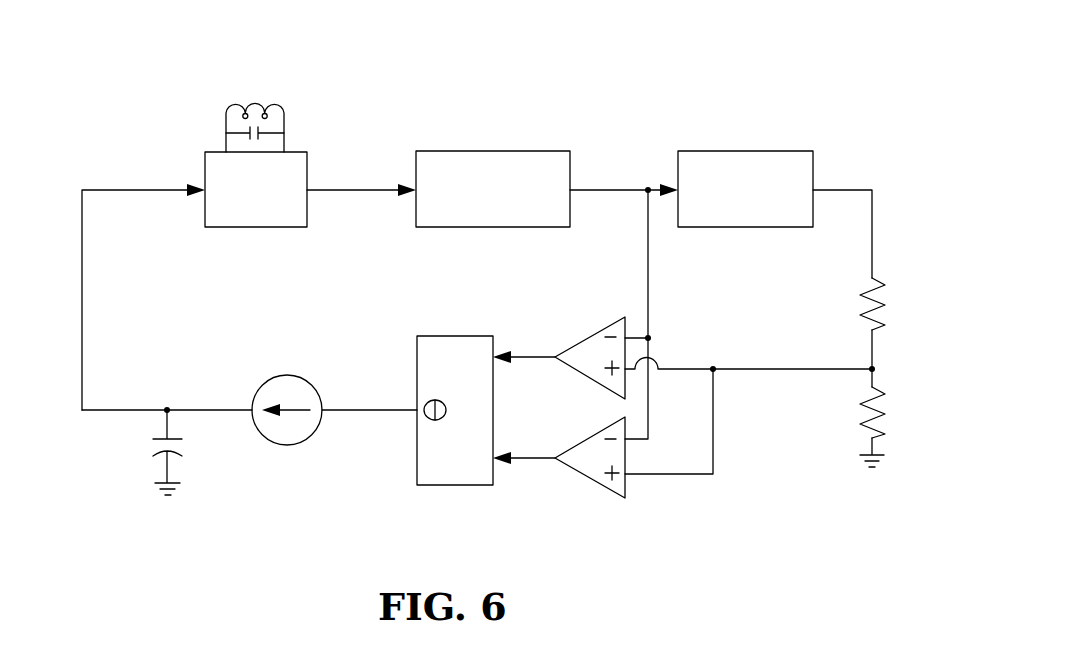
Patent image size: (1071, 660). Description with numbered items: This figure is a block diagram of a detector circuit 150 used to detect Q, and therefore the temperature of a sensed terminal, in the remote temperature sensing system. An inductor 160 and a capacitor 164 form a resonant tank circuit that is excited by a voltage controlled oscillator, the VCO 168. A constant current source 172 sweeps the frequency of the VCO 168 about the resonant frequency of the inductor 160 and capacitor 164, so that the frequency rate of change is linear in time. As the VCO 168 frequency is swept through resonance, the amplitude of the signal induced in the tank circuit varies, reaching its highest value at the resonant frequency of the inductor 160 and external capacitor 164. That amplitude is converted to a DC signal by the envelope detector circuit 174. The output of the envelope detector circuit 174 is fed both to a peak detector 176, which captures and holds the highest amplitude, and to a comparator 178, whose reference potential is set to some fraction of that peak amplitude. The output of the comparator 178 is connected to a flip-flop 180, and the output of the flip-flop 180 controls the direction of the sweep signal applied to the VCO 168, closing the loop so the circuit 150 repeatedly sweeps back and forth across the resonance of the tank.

The circuit 150 is at (700, 92).
The inductor 160 is at (257, 102).
The capacitor 164 is at (152, 448).
The VCO 168 is at (282, 168).
The constant current source 172 is at (282, 393).
The envelope detector circuit 174 is at (502, 168).
The peak detector 176 is at (767, 170).
The comparator 178 is at (593, 340).
The flip-flop 180 is at (427, 458).